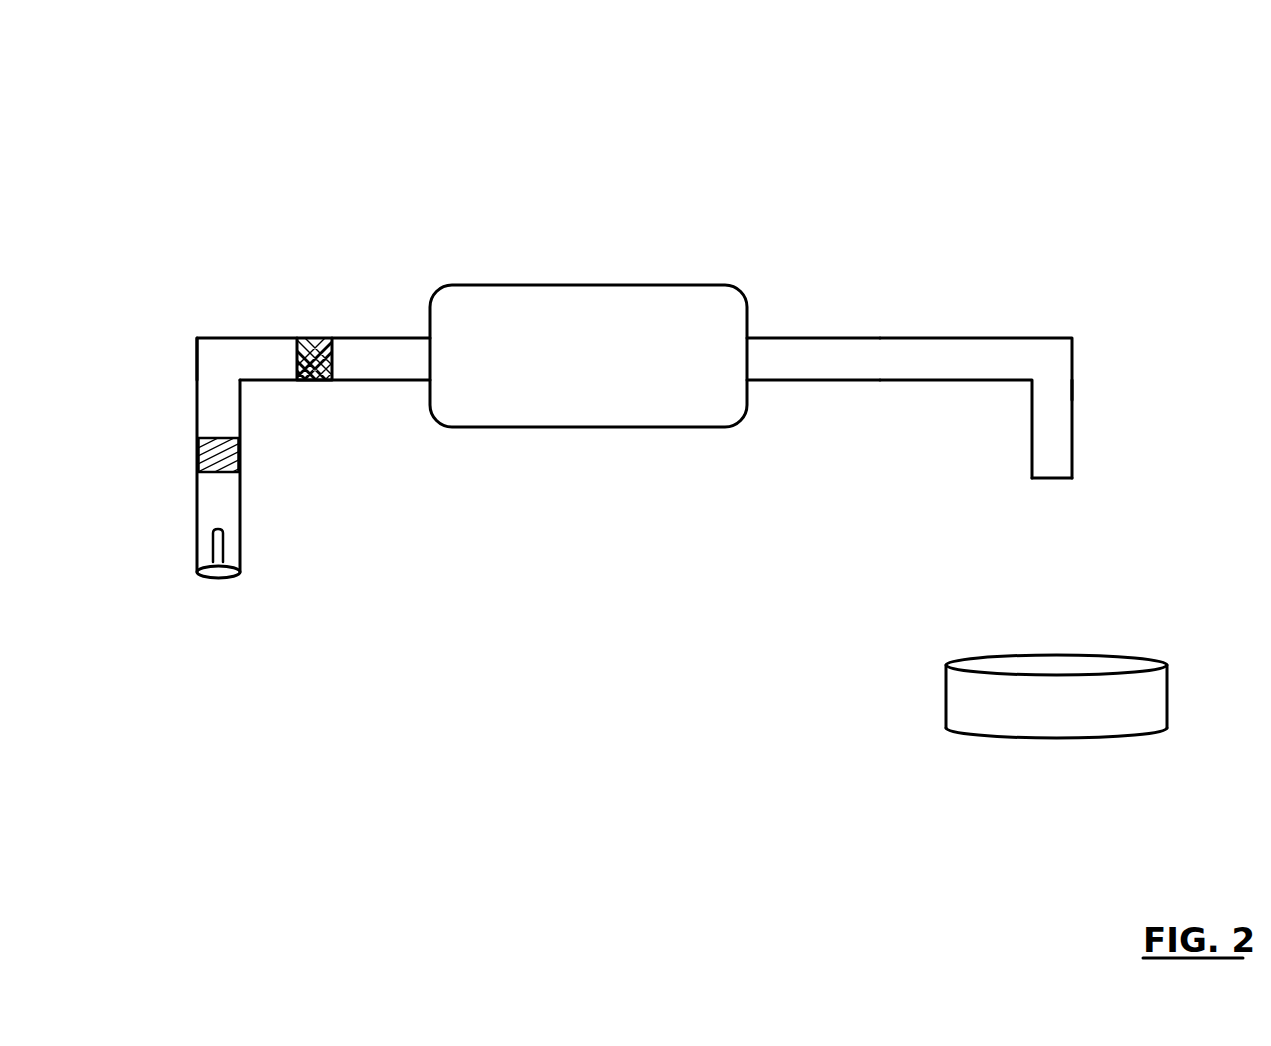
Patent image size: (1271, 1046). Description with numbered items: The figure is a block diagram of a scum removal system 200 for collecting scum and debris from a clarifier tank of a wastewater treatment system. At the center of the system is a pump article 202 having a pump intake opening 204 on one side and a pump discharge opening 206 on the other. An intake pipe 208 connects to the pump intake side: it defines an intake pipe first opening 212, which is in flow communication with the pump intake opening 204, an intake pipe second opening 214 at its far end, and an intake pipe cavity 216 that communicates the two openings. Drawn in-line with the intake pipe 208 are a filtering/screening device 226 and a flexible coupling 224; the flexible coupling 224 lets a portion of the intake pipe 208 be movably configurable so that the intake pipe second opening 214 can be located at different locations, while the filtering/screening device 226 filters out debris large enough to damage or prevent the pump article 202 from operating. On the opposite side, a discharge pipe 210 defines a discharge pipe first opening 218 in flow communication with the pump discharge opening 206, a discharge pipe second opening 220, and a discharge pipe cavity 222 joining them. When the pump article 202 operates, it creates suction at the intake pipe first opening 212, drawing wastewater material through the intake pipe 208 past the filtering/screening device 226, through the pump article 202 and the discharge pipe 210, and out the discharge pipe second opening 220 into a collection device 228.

The scum removal system 200 is at (1169, 98).
The pump article 202 is at (588, 356).
The pump intake opening 204 is at (380, 284).
The pump discharge opening 206 is at (813, 287).
The intake pipe 208 is at (197, 307).
The discharge pipe 210 is at (1028, 317).
The intake pipe first opening 212 is at (335, 431).
The intake pipe second opening 214 is at (160, 592).
The intake pipe cavity 216 is at (151, 455).
The discharge pipe first opening 218 is at (813, 433).
The discharge pipe second opening 220 is at (1103, 521).
The discharge pipe cavity 222 is at (1042, 429).
The flexible coupling 224 is at (161, 463).
The filtering/screening device 226 is at (292, 323).
The collection device 228 is at (982, 696).